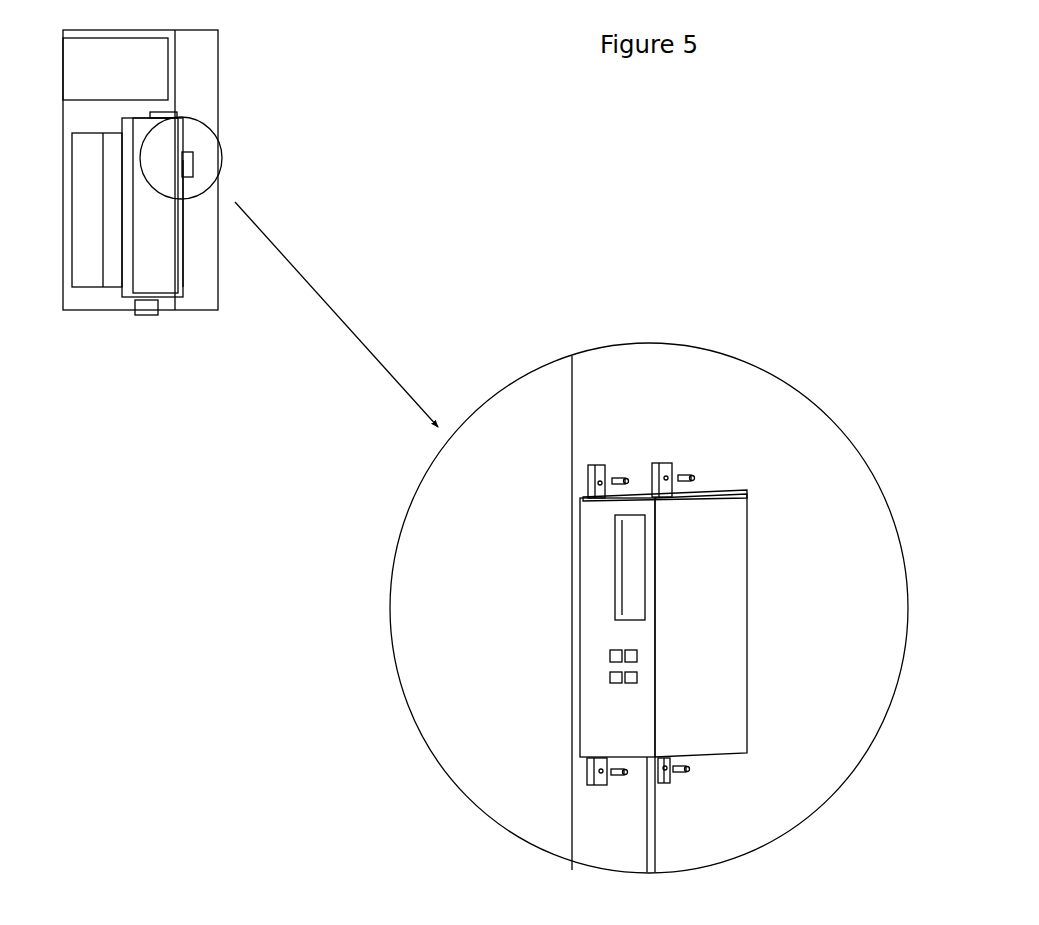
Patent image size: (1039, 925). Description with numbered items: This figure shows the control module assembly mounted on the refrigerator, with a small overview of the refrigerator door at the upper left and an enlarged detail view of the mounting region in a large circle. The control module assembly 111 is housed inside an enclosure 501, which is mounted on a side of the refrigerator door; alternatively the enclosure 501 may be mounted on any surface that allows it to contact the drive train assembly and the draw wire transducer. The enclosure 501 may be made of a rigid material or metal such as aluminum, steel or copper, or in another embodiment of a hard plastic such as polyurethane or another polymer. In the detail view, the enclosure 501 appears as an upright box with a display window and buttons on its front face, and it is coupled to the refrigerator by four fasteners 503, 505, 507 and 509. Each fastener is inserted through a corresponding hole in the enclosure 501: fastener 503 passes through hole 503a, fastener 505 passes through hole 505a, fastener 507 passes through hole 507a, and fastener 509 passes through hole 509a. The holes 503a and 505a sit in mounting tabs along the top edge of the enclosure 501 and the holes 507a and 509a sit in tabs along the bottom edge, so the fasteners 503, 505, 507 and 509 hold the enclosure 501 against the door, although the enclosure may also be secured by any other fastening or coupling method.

The enclosure 501 is at (751, 554).
The control module assembly 111 is at (692, 623).
The fastener 503 is at (662, 441).
The hole 503a is at (597, 483).
The fastener 505 is at (698, 472).
The hole 505a is at (716, 460).
The fastener 507 is at (561, 796).
The hole 507a is at (587, 773).
The fastener 509 is at (740, 788).
The hole 509a is at (712, 801).